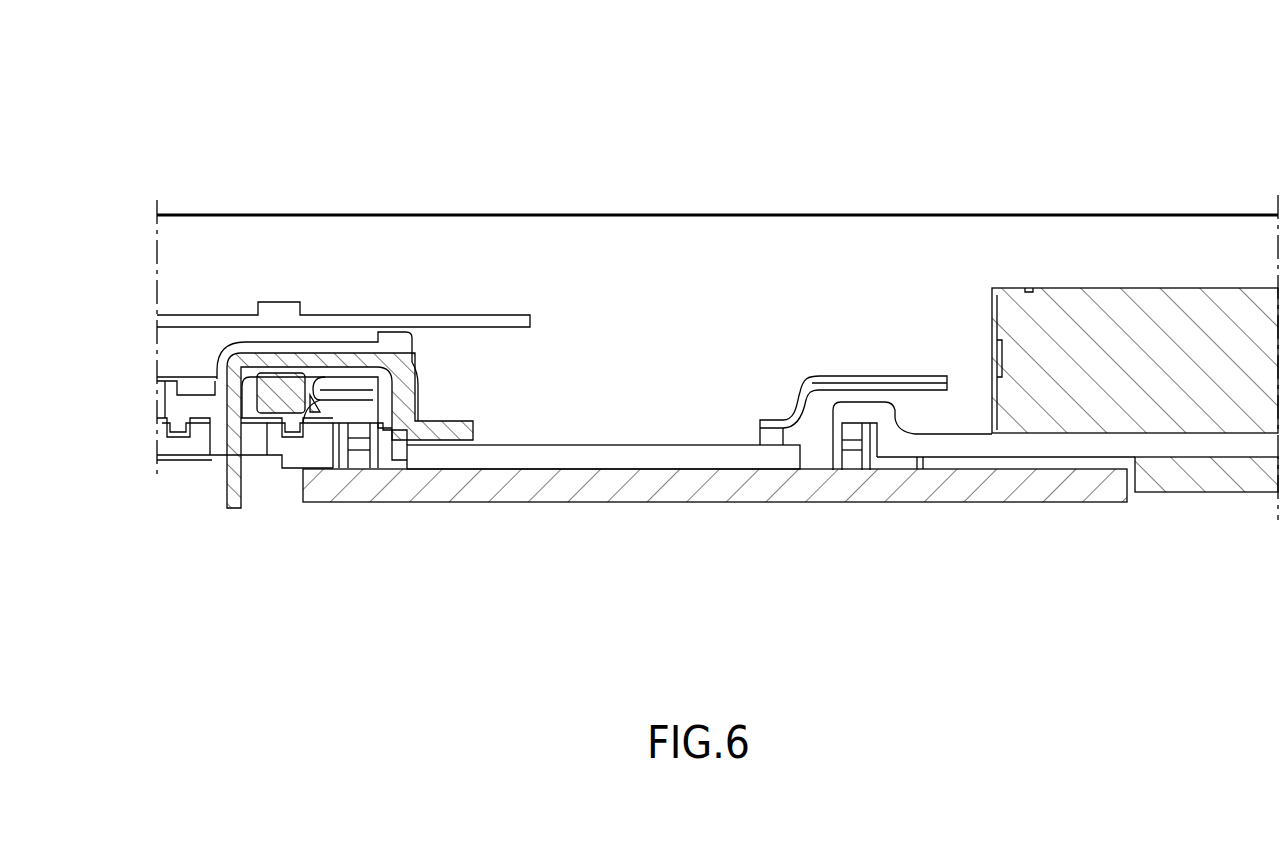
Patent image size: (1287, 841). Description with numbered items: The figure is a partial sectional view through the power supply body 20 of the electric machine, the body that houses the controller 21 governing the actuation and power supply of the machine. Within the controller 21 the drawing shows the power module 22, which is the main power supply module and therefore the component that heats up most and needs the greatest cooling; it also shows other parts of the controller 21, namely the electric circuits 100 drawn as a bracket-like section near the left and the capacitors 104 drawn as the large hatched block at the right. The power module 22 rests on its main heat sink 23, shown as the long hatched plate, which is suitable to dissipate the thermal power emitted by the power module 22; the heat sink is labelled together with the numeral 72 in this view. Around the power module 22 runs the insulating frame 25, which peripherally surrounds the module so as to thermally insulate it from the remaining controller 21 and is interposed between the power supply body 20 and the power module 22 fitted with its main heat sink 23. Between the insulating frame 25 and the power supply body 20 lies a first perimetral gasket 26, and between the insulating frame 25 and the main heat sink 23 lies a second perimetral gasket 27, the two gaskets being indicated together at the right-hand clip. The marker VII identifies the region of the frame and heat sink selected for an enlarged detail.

The power supply body 20 is at (180, 447).
The controller 21 is at (717, 299).
The power module 22 is at (577, 442).
The main heat sink 23 is at (715, 563).
The insulating frame 25 is at (332, 463).
The first perimetral gasket 26 is at (912, 517).
The second perimetral gasket 27 is at (845, 436).
The mounting plate 72 is at (657, 493).
The electric circuits 100 is at (389, 328).
The capacitors 104 is at (1137, 318).
The section detail VII is at (357, 553).